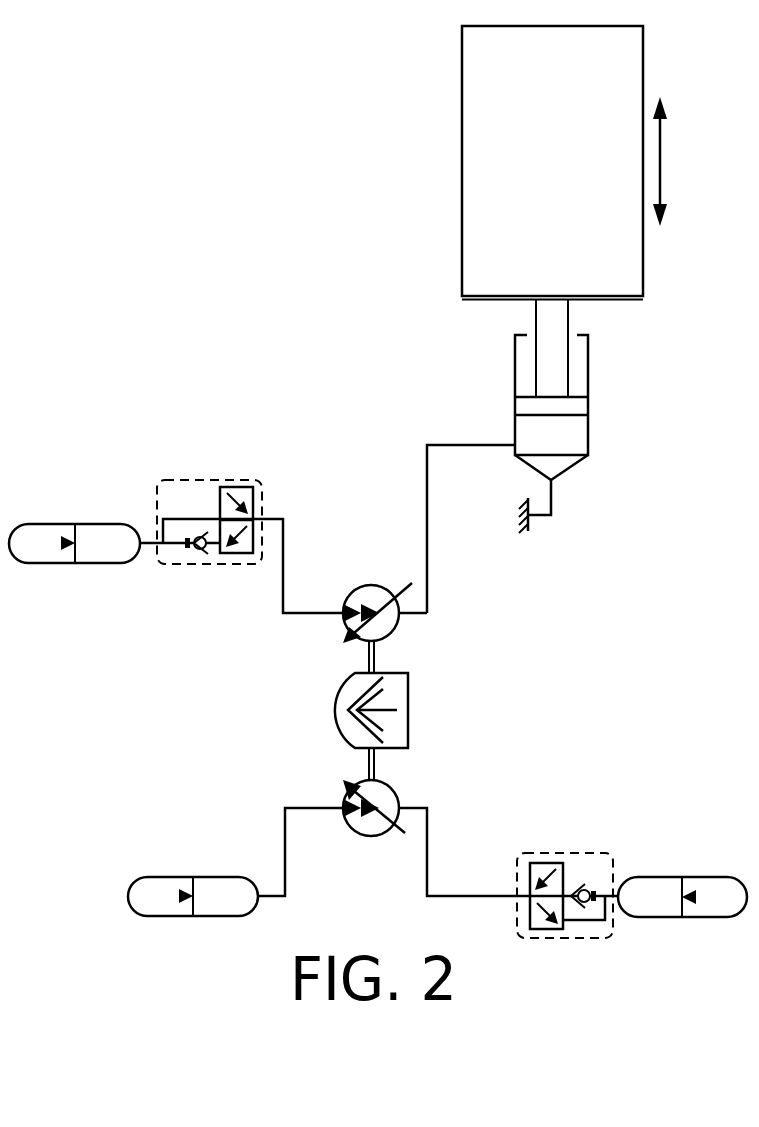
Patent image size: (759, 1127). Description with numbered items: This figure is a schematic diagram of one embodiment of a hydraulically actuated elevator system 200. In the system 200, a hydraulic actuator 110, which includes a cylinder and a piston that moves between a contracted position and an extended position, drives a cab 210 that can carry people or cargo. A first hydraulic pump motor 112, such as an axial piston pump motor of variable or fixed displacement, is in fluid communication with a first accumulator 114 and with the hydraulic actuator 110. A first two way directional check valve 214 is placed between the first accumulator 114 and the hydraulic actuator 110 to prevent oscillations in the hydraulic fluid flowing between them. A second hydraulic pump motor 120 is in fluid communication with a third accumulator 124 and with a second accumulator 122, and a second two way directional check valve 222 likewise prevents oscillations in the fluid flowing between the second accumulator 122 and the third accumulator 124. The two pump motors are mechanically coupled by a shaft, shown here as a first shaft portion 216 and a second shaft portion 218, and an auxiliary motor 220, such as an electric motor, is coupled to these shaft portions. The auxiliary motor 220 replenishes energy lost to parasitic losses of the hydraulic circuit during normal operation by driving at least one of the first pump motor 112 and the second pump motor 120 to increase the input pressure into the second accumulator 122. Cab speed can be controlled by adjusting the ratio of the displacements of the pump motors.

The hydraulic actuated elevator system 200 is at (128, 130).
The cab 210 is at (532, 265).
The hydraulic actuator 110 is at (588, 447).
The first hydraulic pump motor 112 is at (396, 627).
The first accumulator 114 is at (62, 563).
The second hydraulic pump motor 120 is at (371, 832).
The second accumulator 122 is at (675, 877).
The third accumulator 124 is at (200, 877).
The first two way directional check valve 214 is at (227, 480).
The first shaft portion 216 is at (369, 660).
The second shaft portion 218 is at (369, 770).
The auxiliary motor 220 is at (408, 710).
The second two way directional check valve 222 is at (572, 853).